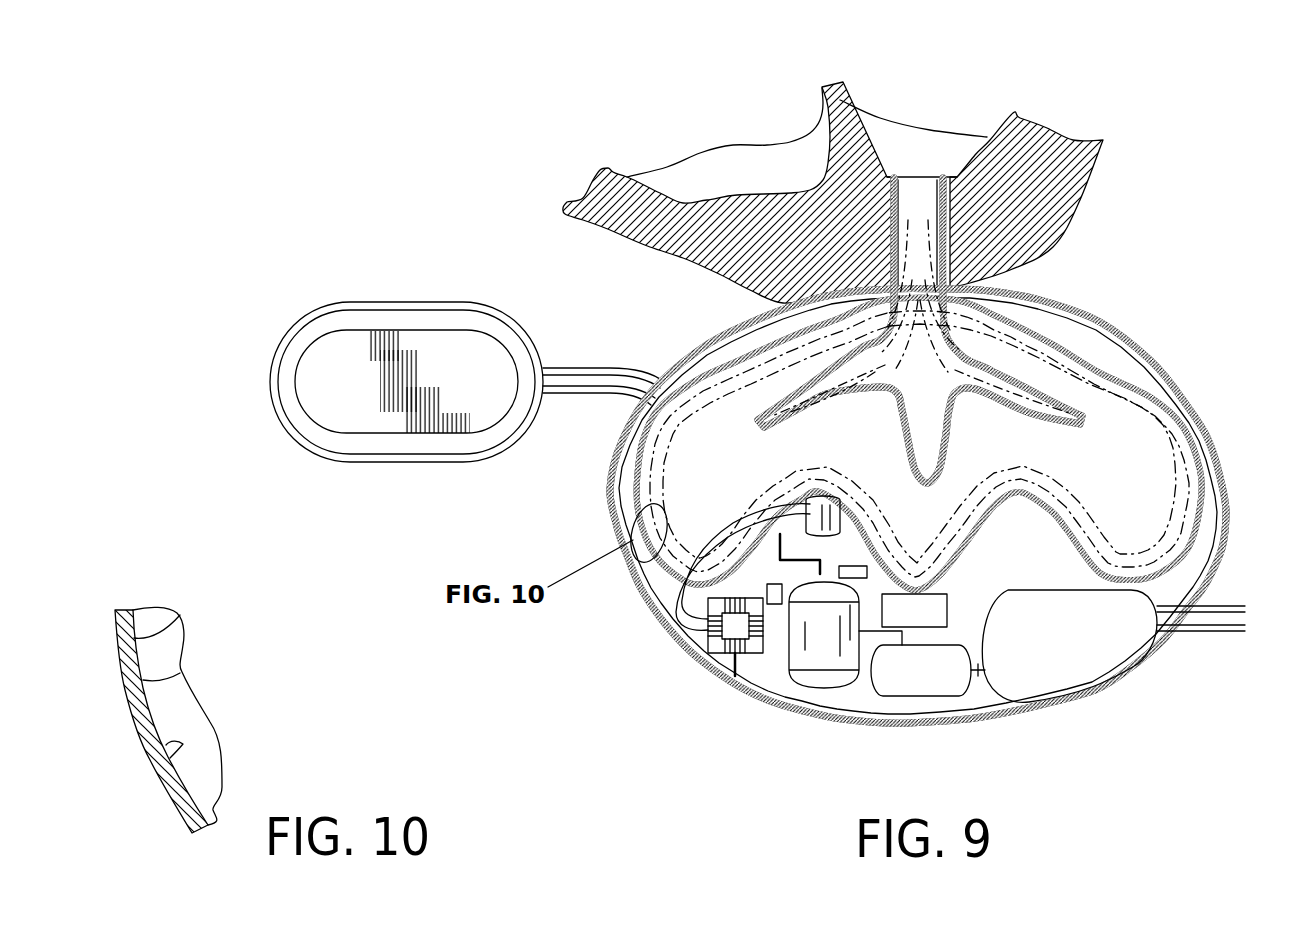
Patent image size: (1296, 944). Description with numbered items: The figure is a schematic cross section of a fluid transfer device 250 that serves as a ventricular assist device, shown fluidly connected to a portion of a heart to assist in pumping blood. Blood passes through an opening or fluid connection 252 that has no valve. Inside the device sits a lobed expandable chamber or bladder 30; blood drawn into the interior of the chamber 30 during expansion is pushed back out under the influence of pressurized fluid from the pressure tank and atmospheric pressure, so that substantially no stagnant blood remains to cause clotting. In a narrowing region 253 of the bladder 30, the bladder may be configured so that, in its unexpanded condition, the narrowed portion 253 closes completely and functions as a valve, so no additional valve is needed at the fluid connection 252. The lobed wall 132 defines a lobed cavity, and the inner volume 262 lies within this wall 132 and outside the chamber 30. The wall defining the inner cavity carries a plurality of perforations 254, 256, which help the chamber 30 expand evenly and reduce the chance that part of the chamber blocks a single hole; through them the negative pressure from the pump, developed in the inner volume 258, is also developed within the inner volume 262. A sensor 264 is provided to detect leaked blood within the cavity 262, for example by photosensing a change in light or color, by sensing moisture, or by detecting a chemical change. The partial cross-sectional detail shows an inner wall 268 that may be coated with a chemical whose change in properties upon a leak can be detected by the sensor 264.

In FIG. 9, the fluid transfer device 250 is at (1136, 310).
In FIG. 9, the fluid connection 252 is at (928, 248).
In FIG. 9, the narrowing region 253 is at (940, 318).
In FIG. 9, the lobed wall 132 is at (1116, 376).
In FIG. 10, the lobed wall 132 is at (124, 610).
In FIG. 9, the expandable chamber 30 is at (920, 362).
In FIG. 9, the inner volume 258 is at (1045, 563).
In FIG. 9, the inner volume 262 is at (1157, 537).
In FIG. 9, the sensor 264 is at (677, 630).
In FIG. 10, the perforation 254 is at (180, 615).
In FIG. 10, the perforation 256 is at (180, 673).
In FIG. 10, the inner wall 268 is at (152, 767).